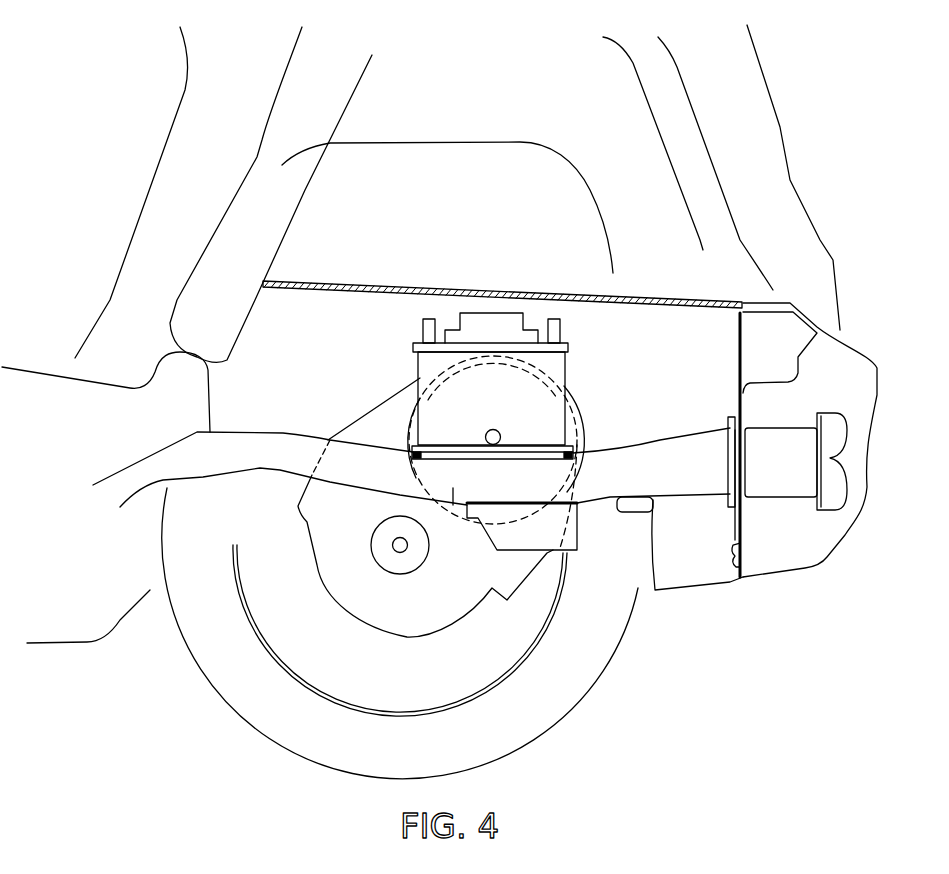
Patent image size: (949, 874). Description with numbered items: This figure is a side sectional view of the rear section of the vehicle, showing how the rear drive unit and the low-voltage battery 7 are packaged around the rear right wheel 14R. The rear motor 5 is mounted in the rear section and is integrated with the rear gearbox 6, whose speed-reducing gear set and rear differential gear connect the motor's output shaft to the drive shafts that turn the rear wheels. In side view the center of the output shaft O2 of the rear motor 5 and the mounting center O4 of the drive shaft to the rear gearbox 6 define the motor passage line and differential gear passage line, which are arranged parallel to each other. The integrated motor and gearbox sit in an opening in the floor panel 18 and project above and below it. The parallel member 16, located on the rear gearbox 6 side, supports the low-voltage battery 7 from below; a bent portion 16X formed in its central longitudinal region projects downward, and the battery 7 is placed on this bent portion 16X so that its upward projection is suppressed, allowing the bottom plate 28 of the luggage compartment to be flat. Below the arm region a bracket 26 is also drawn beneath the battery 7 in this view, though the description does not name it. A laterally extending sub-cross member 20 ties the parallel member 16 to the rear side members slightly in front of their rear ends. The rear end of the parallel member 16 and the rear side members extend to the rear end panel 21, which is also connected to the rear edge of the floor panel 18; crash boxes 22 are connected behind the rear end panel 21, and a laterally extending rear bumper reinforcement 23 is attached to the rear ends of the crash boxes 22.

The rear right wheel 14R is at (177, 550).
The bottom plate of the luggage compartment 28 is at (655, 299).
The rear end panel 21 is at (740, 350).
The low-voltage battery 7 is at (557, 365).
The rear motor 5 is at (415, 432).
The center of the output shaft of the rear motor O2 is at (508, 433).
The floor panel 18 is at (675, 437).
The parallel member 16 is at (698, 478).
The bracket 26 is at (563, 550).
The sub-cross member 20 is at (643, 512).
The crash box 22 is at (788, 482).
The rear bumper reinforcement 23 is at (832, 480).
The rear gearbox 6 is at (332, 548).
The mounting center of the drive shaft to the rear gearbox O4 is at (398, 556).
The bent portion 16X is at (453, 505).